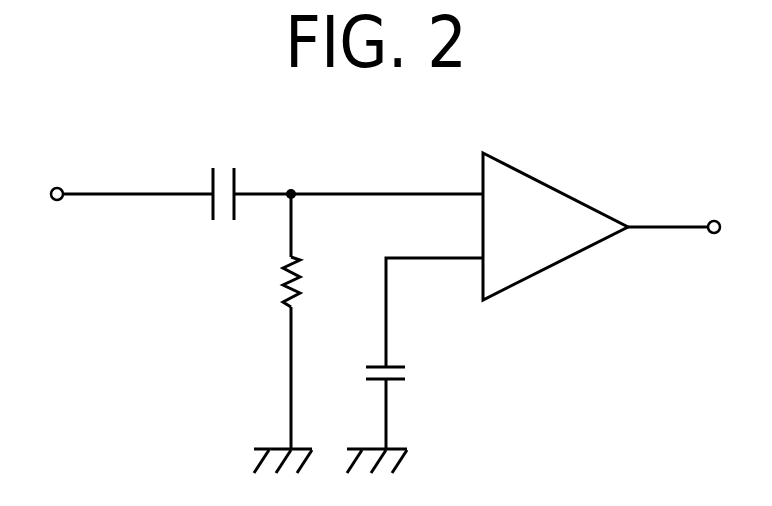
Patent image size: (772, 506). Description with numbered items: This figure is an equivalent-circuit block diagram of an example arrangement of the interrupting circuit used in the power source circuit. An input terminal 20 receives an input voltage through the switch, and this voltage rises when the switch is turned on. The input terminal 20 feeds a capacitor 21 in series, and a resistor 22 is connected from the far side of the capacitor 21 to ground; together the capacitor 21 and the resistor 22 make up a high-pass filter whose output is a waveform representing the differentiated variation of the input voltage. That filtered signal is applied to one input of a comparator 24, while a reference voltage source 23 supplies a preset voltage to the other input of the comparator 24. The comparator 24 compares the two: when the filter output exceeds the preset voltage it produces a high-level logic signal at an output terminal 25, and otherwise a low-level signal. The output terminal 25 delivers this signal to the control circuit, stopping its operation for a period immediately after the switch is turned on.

The input terminal 20 is at (57, 201).
The capacitor 21 is at (222, 212).
The resistor 22 is at (278, 290).
The reference voltage source 23 is at (400, 372).
The comparator 24 is at (533, 172).
The output terminal 25 is at (714, 234).